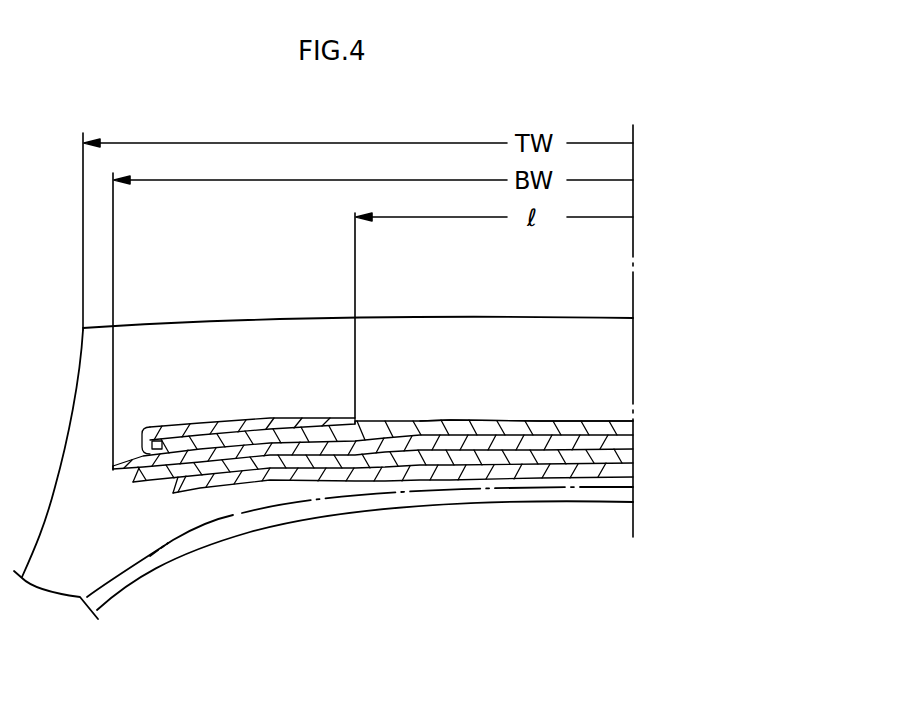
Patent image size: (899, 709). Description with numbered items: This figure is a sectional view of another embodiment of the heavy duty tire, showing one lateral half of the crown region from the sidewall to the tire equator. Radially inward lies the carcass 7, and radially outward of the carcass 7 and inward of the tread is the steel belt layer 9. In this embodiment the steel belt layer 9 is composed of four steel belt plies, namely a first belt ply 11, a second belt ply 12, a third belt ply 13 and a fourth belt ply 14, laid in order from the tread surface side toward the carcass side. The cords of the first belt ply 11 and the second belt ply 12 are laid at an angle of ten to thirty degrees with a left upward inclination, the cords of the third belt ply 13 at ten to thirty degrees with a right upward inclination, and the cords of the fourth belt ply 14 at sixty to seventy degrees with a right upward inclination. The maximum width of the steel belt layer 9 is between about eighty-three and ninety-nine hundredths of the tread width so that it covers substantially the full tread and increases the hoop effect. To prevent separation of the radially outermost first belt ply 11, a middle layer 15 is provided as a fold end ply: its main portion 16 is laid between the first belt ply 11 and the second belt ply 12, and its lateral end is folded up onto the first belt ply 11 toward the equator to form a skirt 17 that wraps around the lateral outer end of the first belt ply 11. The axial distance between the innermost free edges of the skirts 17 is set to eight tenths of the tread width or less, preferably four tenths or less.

The carcass 7 is at (173, 540).
The steel belt layer 9 is at (818, 363).
The first belt ply 11 is at (633, 427).
The second belt ply 12 is at (633, 449).
The third belt ply 13 is at (633, 460).
The fourth belt ply 14 is at (633, 475).
The middle layer 15 is at (138, 441).
The main portion 16 is at (453, 440).
The skirt 17 is at (282, 420).